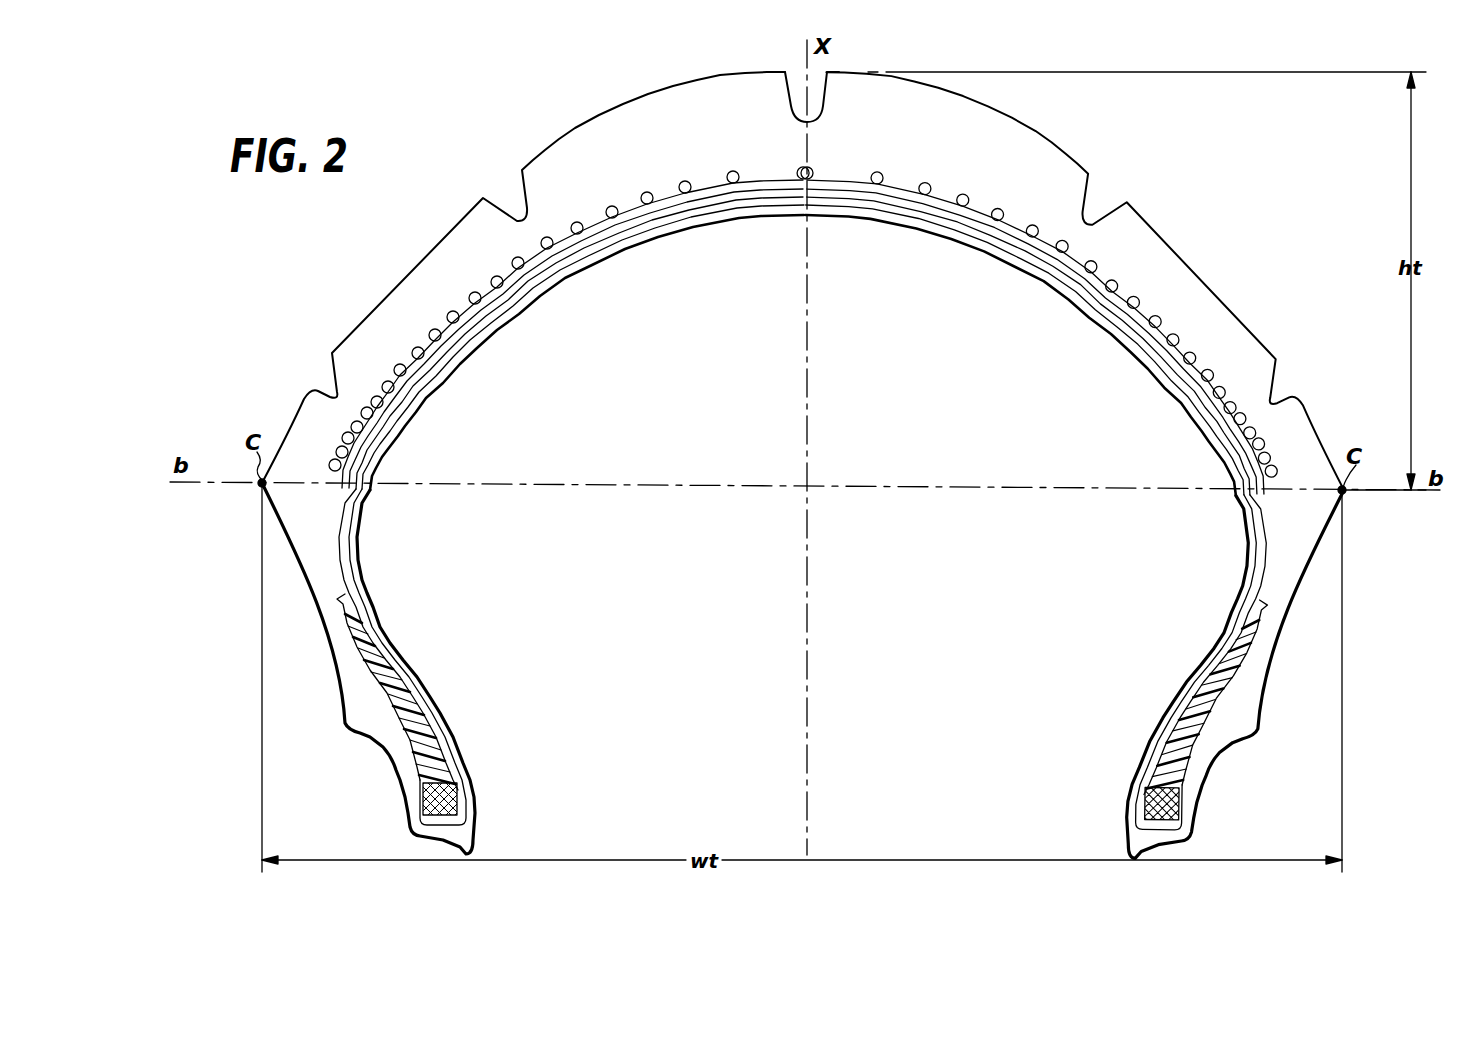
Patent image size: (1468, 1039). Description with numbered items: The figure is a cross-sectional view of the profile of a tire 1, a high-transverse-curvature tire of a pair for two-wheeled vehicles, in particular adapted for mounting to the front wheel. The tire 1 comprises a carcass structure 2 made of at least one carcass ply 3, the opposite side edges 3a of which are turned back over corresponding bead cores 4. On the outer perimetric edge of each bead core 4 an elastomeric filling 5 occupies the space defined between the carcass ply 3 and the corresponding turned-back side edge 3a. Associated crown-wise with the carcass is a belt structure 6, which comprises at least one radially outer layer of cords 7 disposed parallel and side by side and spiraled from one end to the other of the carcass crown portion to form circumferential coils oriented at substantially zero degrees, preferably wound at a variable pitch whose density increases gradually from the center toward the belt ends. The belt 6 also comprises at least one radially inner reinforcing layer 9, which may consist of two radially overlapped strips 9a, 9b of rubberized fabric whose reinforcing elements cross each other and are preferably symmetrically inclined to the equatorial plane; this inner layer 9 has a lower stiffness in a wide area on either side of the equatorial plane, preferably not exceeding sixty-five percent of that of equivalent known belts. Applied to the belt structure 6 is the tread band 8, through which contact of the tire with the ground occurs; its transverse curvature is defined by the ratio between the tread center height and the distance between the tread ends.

The tire 1 is at (553, 94).
The carcass structure 2 is at (343, 518).
The carcass ply 3 is at (1253, 548).
The turned-back side edge of the carcass ply 3a is at (383, 714).
The bead core 4 is at (453, 804).
The elastomeric filling 5 is at (437, 763).
The belt structure 6 is at (1278, 497).
The cords 7 is at (1119, 288).
The tread band 8 is at (985, 138).
The radially inner reinforcing layer 9 is at (1140, 330).
The radially overlapped strip 9a is at (620, 227).
The radially overlapped strip 9b is at (672, 200).